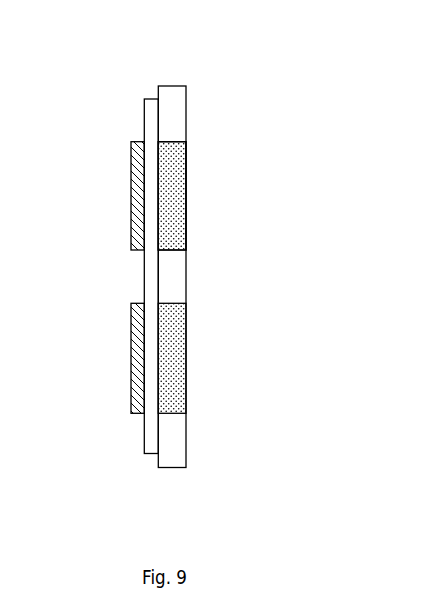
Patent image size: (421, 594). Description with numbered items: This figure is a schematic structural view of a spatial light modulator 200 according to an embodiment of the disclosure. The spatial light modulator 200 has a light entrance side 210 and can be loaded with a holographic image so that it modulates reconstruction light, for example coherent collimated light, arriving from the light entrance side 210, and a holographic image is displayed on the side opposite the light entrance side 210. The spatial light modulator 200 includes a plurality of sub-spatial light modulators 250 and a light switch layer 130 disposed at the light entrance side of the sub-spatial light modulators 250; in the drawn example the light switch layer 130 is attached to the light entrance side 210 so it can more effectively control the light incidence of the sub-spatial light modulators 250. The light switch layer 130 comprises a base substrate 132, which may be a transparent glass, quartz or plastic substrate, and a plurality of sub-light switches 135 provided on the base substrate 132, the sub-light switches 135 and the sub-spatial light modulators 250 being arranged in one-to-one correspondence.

The spatial light modulator 200 is at (170, 118).
The light entrance side 210 is at (150, 93).
The sub-spatial light modulators 250 is at (178, 198).
The light switch layer 130 is at (194, 339).
The base substrate 132 is at (142, 413).
The sub-light switches 135 is at (158, 415).